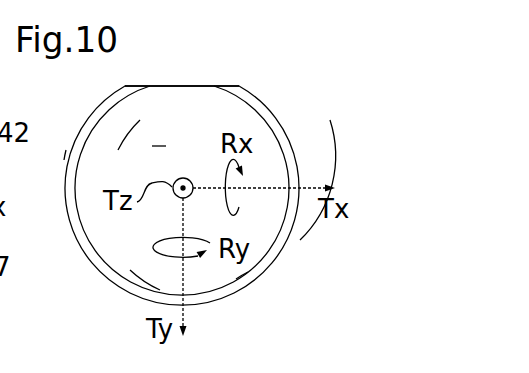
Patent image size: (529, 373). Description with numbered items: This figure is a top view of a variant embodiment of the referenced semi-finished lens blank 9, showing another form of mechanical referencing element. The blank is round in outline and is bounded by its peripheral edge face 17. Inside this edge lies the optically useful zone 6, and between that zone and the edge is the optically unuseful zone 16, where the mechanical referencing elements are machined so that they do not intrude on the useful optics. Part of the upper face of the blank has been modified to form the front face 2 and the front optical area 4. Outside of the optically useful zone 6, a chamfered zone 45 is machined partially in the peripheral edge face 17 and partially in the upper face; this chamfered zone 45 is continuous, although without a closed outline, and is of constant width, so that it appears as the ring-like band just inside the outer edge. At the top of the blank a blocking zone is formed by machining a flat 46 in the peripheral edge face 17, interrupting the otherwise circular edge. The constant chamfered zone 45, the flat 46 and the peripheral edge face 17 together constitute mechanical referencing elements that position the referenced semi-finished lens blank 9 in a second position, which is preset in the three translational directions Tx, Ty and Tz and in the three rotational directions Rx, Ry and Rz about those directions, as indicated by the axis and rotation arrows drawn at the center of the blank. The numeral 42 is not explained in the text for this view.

The front face 2 is at (160, 134).
The front optical area 4 is at (134, 255).
The optically useful zone 6 is at (128, 160).
The referenced semi-finished lens blank 9 is at (359, 84).
The optically unuseful zone 16 is at (272, 110).
The peripheral edge face 17 is at (286, 243).
The element 42 is at (65, 155).
The chamfered zone 45 is at (242, 281).
The flat 46 is at (182, 86).